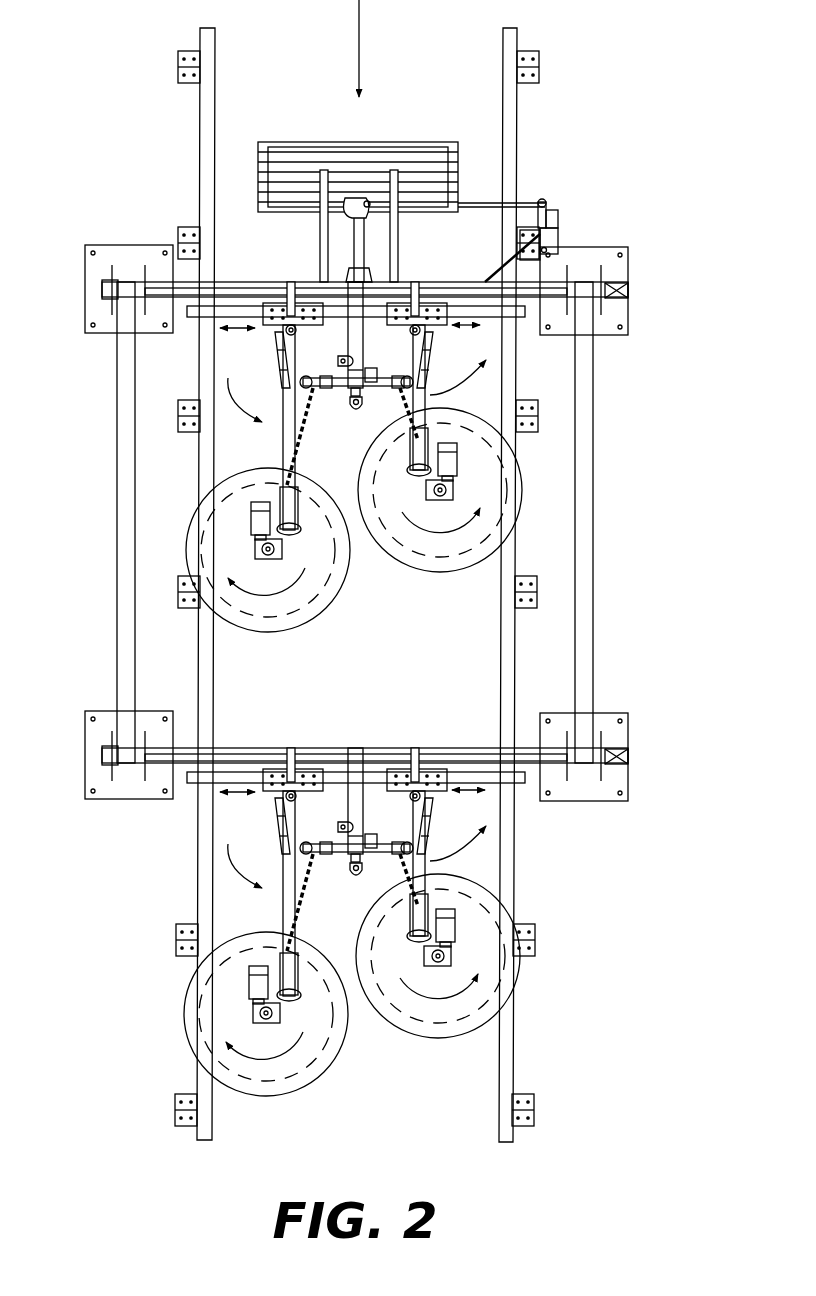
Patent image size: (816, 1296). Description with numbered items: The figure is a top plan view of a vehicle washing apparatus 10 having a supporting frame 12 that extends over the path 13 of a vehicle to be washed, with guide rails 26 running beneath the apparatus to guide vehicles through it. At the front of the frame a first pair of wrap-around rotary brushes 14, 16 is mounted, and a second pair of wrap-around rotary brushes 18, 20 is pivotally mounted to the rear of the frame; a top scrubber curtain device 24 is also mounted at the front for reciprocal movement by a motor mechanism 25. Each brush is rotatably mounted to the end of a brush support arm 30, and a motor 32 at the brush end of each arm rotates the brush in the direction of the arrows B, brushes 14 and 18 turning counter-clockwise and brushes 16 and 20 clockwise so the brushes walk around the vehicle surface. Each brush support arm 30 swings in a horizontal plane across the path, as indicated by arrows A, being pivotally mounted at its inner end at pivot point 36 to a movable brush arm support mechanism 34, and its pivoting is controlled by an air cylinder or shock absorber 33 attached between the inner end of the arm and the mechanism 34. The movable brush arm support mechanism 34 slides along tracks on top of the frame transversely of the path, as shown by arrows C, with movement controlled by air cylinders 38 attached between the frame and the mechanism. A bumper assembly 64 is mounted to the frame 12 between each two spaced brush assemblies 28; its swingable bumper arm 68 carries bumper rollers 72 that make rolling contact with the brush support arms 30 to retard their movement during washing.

The vehicle washing apparatus 10 is at (662, 361).
The supporting frame 12 is at (117, 378).
The path of a vehicle 13 is at (362, 42).
The wrap-around rotary brush 14 is at (457, 578).
The wrap-around rotary brush 16 is at (272, 632).
The wrap-around rotary brush 18 is at (438, 983).
The wrap-around rotary brush 20 is at (266, 1032).
The top scrubber curtain device 24 is at (372, 142).
The motor mechanism 25 is at (558, 213).
The guide rails 26 is at (208, 150).
The brush assemblies 28 is at (384, 562).
The brush support arm 30 is at (283, 452).
The motor 32 is at (455, 464).
The air cylinder or shock absorber 33 is at (275, 345).
The movable brush arm support mechanism 34 is at (309, 334).
The pivot point 36 is at (301, 782).
The air cylinders 38 is at (162, 285).
The bumper assembly 64 is at (350, 425).
The swingable bumper arm 68 is at (338, 418).
The bumper rollers 72 is at (300, 286).